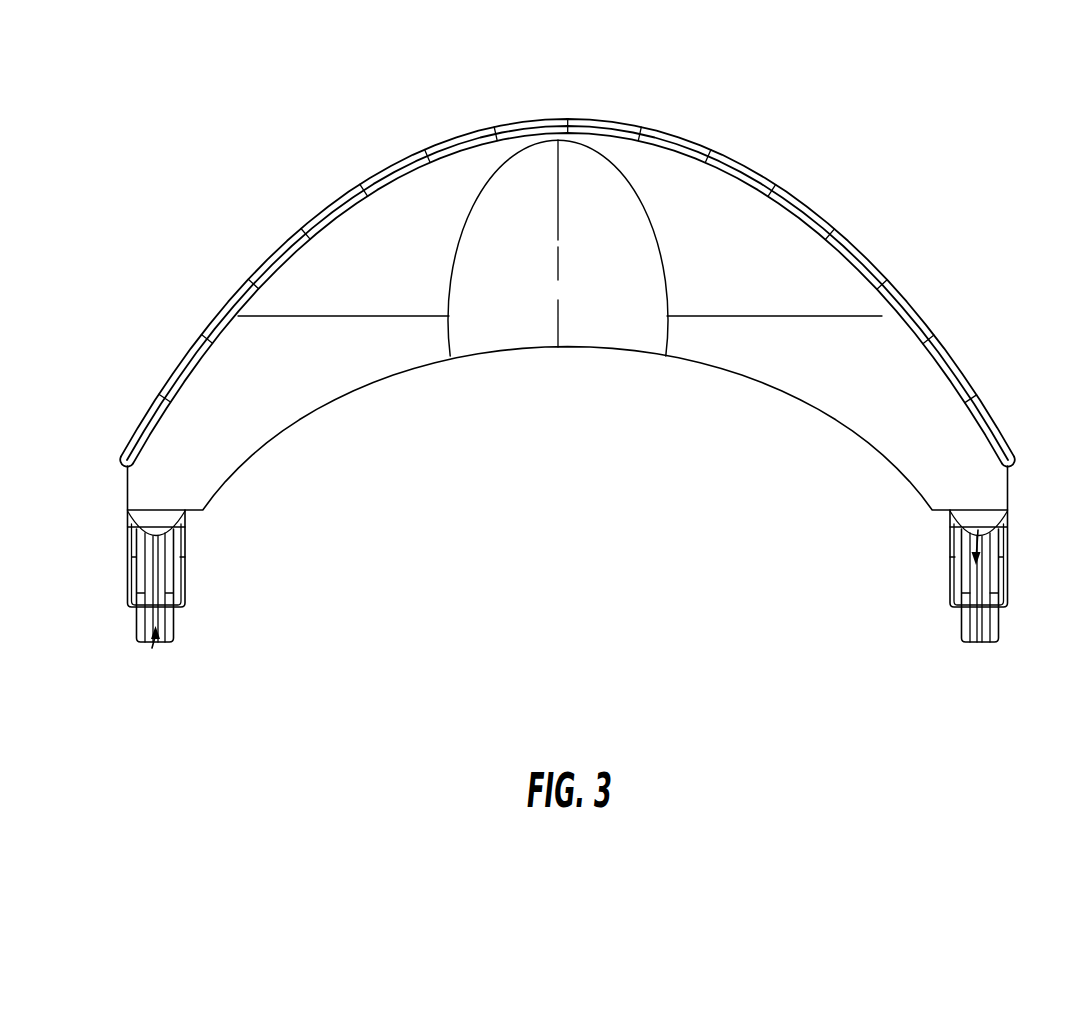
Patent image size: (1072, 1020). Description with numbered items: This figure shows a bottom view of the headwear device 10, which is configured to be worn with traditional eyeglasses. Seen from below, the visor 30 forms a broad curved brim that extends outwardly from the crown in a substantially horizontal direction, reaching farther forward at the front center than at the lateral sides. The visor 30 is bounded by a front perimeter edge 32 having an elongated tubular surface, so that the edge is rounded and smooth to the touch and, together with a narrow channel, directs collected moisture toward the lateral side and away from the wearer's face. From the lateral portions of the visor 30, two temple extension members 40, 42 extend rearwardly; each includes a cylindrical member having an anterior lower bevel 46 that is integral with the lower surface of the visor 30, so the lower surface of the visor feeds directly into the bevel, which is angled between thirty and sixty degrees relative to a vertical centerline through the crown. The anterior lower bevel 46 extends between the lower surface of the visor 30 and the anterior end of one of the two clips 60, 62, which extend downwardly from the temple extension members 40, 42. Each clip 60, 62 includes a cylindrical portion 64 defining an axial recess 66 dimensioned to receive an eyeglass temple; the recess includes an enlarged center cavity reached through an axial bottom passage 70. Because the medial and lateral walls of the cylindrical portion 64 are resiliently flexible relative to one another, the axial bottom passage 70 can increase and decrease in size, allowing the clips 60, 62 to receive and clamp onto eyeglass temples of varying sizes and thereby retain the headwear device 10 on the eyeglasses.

The headwear device 10 is at (873, 136).
The visor 30 is at (698, 203).
The front perimeter edge 32 is at (446, 138).
The temple extension member 40 is at (949, 540).
The temple extension member 42 is at (186, 563).
The anterior lower bevel 46 is at (145, 528).
The clip 60 is at (960, 630).
The clip 62 is at (176, 632).
The cylindrical portion 64 is at (986, 583).
The axial recess 66 is at (153, 612).
The axial bottom passage 70 is at (152, 648).